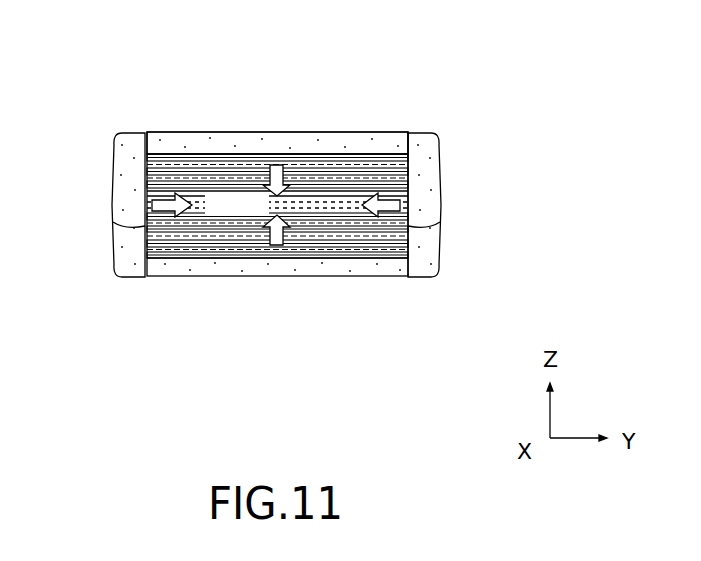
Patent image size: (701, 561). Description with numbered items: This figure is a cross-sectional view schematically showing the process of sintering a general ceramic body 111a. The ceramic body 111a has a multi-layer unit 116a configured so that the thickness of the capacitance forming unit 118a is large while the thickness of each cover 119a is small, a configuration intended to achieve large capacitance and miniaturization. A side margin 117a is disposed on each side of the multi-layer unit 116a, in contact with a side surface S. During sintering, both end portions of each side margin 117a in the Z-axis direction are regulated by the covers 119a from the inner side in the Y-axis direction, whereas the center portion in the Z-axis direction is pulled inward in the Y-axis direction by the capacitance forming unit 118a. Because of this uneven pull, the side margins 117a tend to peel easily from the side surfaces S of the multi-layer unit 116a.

The ceramic body 111a is at (279, 182).
The multi-layer unit 116a is at (200, 117).
The side margin 117a is at (137, 195).
The capacitance forming unit 118a is at (277, 205).
The cover 119a is at (278, 132).
The side surface S is at (137, 229).